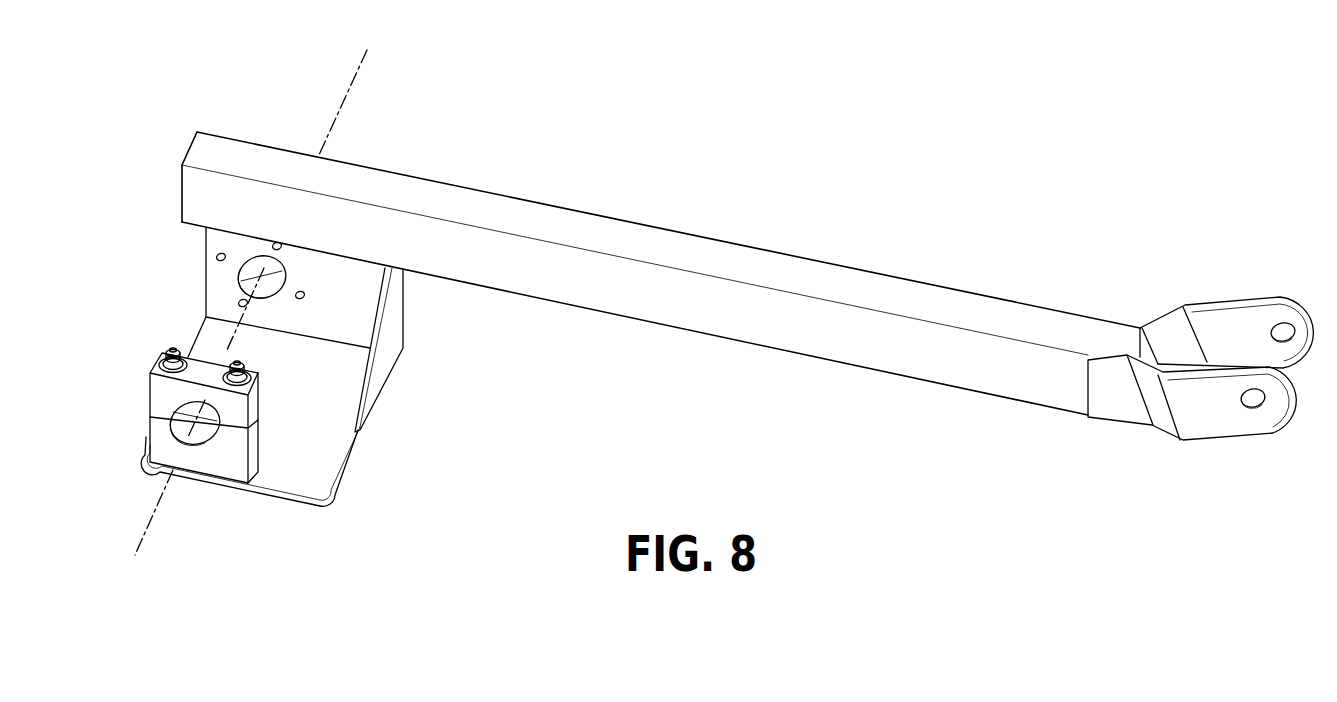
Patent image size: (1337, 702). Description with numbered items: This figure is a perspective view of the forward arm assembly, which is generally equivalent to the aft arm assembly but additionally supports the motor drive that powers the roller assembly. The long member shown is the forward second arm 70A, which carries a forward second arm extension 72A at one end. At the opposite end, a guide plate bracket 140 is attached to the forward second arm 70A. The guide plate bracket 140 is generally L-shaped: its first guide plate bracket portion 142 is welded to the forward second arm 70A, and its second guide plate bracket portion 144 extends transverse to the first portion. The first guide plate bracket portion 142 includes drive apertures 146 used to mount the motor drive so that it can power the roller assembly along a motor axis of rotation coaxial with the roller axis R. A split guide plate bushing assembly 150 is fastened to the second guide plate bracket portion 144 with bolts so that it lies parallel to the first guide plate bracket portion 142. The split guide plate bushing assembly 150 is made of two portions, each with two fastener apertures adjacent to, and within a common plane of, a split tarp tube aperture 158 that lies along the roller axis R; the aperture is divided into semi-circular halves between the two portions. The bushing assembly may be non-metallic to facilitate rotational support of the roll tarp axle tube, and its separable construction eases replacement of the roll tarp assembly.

The roller axis R is at (343, 102).
The forward second arm 70A is at (935, 295).
The forward second arm extension 72A is at (1178, 415).
The guide plate bracket 140 is at (399, 368).
The first guide plate bracket portion 142 is at (213, 277).
The second guide plate bracket portion 144 is at (318, 460).
The drive apertures 146 is at (288, 281).
The split guide plate bushing assembly 150 is at (148, 428).
The split tarp tube aperture 158 is at (207, 440).